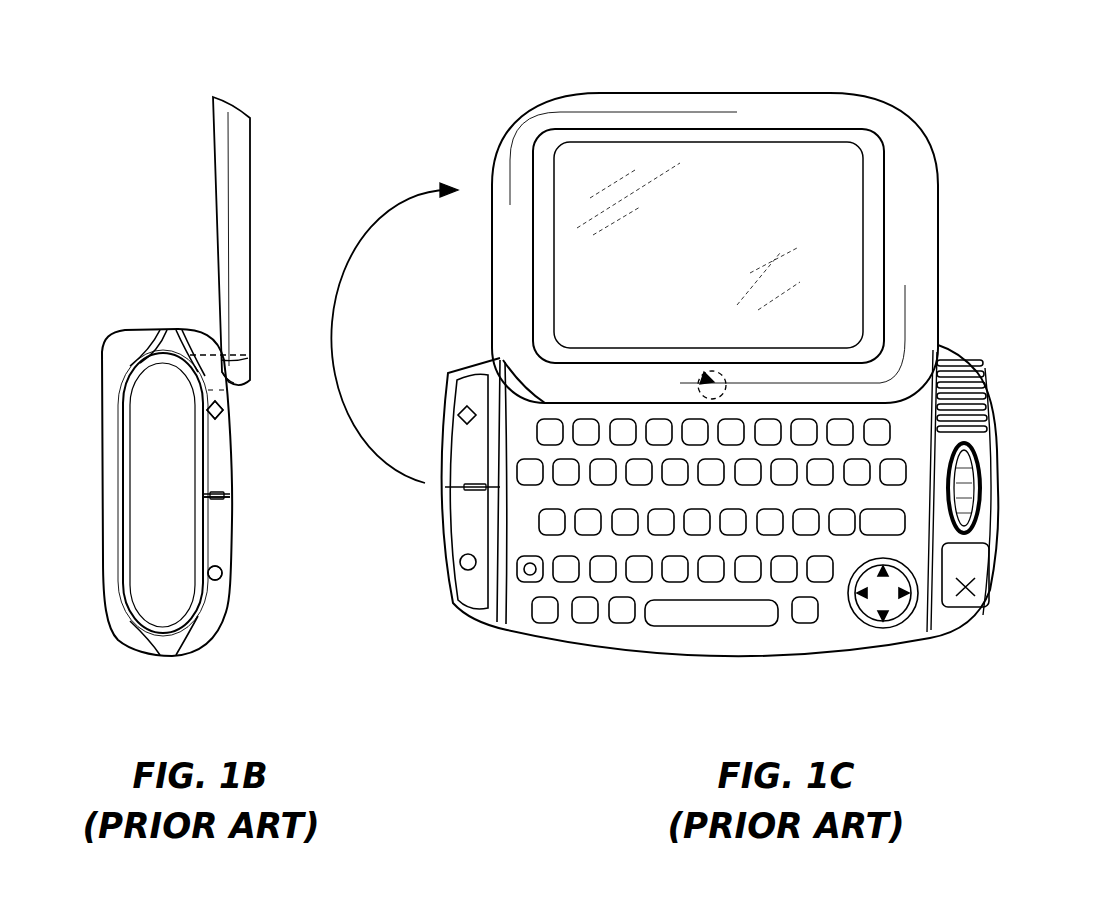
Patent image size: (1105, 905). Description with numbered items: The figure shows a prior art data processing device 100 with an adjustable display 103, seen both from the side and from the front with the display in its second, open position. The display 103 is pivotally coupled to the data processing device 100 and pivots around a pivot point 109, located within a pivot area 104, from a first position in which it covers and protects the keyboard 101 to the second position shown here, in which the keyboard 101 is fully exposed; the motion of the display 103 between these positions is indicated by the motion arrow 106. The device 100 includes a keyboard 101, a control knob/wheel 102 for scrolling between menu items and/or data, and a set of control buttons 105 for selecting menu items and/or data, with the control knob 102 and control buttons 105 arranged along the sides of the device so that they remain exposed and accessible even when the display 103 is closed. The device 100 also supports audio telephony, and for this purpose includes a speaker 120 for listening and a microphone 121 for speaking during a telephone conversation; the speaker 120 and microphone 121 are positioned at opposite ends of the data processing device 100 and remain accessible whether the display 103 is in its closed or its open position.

In FIG. 1B, the data processing device 100 is at (459, 677).
In FIG. 1C, the keyboard 101 is at (720, 530).
In FIG. 1C, the control knob/wheel 102 is at (975, 490).
In FIG. 1B, the display 103 is at (243, 117).
In FIG. 1C, the display 103 is at (762, 248).
In FIG. 1B, the pivot area 104 is at (238, 360).
In FIG. 1C, the pivot area 104 is at (722, 370).
In FIG. 1B, the control buttons 105 is at (220, 459).
In FIG. 1C, the control buttons 105 is at (447, 388).
In FIG. 1C, the motion arrow 106 is at (394, 333).
In FIG. 1C, the pivot point 109 is at (695, 372).
In FIG. 1C, the speaker 120 is at (987, 395).
In FIG. 1C, the microphone 121 is at (505, 633).